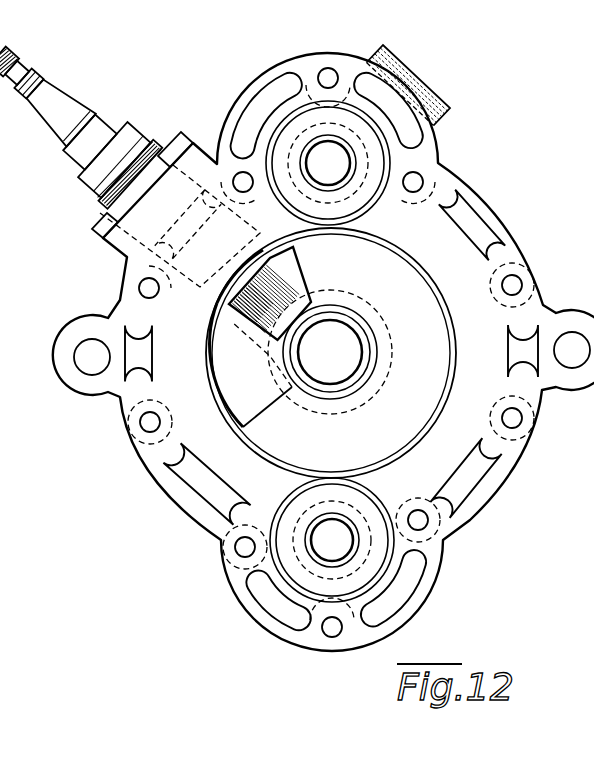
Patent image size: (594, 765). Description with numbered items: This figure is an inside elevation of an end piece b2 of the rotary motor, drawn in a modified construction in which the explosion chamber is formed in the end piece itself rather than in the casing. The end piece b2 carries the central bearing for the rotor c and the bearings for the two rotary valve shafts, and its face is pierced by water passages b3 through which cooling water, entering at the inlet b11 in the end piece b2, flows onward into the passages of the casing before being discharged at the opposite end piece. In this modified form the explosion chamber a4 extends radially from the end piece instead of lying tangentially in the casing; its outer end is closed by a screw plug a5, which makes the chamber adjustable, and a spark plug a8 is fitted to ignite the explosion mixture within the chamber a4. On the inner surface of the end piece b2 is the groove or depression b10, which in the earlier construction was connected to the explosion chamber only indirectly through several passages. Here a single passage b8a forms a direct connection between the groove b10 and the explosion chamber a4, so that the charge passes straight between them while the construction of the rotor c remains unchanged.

The explosion chamber a4 is at (188, 293).
The screw plug a5 is at (162, 140).
The spark plug a8 is at (73, 108).
The end piece b2 is at (453, 177).
The water passages b3 is at (170, 458).
The passage b8a is at (288, 300).
The groove b10 is at (278, 412).
The water inlet b11 is at (414, 85).
The rotor c is at (228, 353).